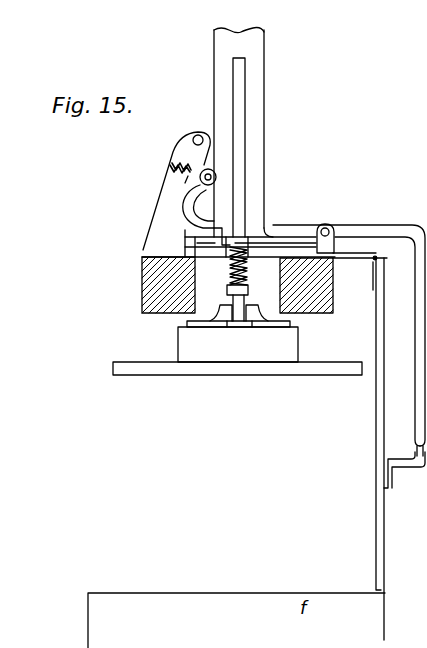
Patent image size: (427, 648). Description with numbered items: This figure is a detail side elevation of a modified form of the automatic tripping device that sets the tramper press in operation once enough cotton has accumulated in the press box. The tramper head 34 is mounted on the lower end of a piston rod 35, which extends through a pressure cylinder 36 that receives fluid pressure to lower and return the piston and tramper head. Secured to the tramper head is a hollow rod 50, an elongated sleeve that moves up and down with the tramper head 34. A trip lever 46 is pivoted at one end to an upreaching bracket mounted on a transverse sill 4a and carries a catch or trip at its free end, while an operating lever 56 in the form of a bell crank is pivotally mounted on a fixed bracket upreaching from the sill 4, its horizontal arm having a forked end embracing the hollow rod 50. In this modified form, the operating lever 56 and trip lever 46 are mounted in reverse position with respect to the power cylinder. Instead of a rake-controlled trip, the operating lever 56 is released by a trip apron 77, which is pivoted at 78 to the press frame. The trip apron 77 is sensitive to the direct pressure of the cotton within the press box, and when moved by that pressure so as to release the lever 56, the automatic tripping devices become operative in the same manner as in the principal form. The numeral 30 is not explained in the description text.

The hollow rod 50 is at (245, 93).
The pressure cylinder 36 is at (266, 164).
The trip lever 46 is at (190, 160).
The sill 4 is at (143, 290).
The transverse sill 4a is at (330, 305).
The tramper head 34 is at (178, 357).
The operating lever 56 is at (377, 230).
The pivot 78 is at (373, 262).
The trip apron 77 is at (376, 352).
The frame 30 is at (413, 55).
The piston rod 35 is at (419, 573).